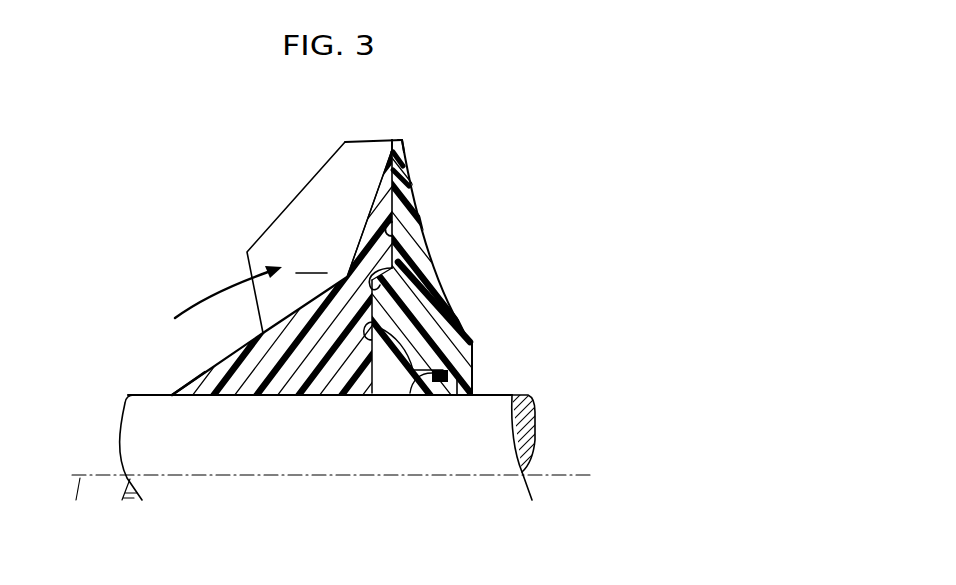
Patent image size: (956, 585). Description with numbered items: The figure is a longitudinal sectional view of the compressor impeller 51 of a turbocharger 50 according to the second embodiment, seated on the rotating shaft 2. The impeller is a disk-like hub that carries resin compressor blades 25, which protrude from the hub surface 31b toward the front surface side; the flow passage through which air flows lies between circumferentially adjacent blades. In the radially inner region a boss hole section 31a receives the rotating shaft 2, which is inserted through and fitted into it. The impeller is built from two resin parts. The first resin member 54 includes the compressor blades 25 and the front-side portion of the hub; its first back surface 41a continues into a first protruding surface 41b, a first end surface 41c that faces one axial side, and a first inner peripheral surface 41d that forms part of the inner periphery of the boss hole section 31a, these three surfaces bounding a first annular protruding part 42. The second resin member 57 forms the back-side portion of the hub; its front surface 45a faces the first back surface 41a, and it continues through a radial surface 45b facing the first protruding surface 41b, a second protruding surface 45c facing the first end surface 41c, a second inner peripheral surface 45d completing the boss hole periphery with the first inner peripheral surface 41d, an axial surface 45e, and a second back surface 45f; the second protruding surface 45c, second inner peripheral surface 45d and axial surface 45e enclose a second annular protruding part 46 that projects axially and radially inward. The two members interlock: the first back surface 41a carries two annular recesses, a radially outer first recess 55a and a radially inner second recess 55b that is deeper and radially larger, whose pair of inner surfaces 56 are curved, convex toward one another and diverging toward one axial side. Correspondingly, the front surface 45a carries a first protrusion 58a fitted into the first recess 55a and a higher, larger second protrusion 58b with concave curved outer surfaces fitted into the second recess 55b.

The rotating shaft 2 is at (125, 429).
The compressor blades 25 is at (366, 148).
The boss hole section 31a is at (222, 396).
The hub surface 31b is at (203, 370).
The first back surface 41a is at (390, 262).
The first protruding surface 41b is at (448, 360).
The first end surface 41c is at (474, 348).
The first inner peripheral surface 41d is at (370, 348).
The first annular protruding part 42 is at (442, 383).
The front surface 45a is at (391, 178).
The radial surface 45b is at (398, 382).
The second protruding surface 45c is at (418, 382).
The second inner peripheral surface 45d is at (465, 385).
The axial surface 45e is at (470, 381).
The second back surface 45f is at (403, 161).
The second annular protruding part 46 is at (532, 414).
The turbocharger 50 is at (556, 112).
The compressor impeller 51 is at (548, 174).
The first resin member 54 is at (288, 382).
The first recess 55a is at (405, 205).
The second recess 55b is at (405, 318).
The inner surfaces 56 is at (358, 272).
The second resin member 57 is at (448, 381).
The first protrusion 58a is at (389, 238).
The second protrusion 58b is at (383, 298).